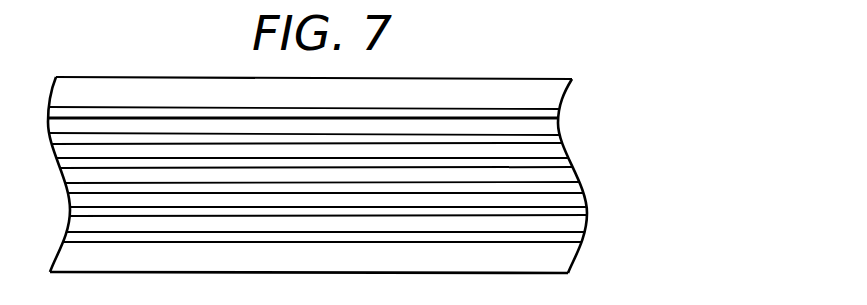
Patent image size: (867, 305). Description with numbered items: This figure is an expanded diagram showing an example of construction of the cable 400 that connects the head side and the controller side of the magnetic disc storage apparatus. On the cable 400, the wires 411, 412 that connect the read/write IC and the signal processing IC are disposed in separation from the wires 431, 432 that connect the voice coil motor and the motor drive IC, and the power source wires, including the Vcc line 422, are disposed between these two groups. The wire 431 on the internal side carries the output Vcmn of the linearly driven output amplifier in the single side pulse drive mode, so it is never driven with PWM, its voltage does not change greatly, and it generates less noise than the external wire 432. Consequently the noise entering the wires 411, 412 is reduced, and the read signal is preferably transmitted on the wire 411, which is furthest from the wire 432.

The cable 400 is at (547, 57).
The wire 411 is at (562, 112).
The wire 412 is at (560, 134).
The power source wire 422 is at (583, 188).
The wire 431 is at (583, 213).
The wire 432 is at (583, 240).